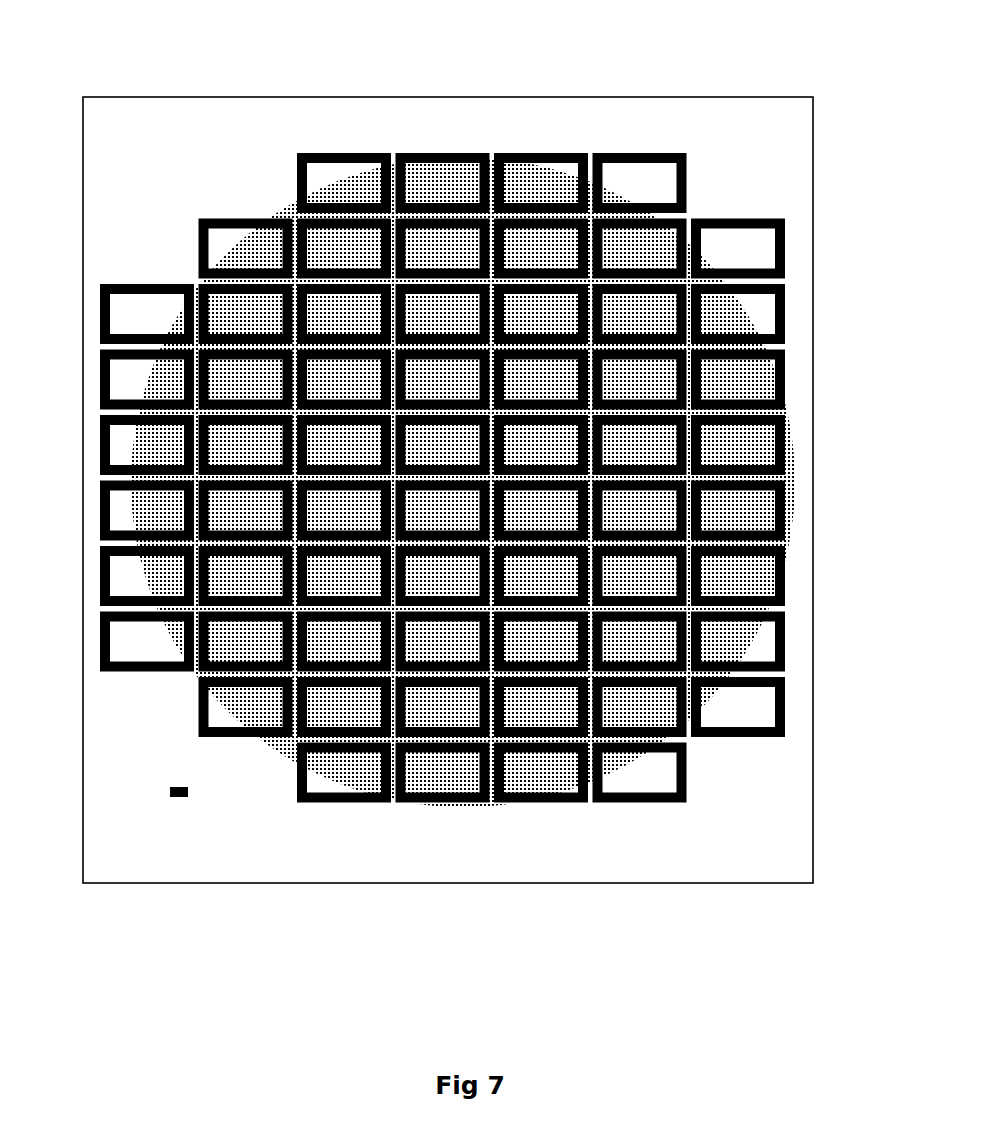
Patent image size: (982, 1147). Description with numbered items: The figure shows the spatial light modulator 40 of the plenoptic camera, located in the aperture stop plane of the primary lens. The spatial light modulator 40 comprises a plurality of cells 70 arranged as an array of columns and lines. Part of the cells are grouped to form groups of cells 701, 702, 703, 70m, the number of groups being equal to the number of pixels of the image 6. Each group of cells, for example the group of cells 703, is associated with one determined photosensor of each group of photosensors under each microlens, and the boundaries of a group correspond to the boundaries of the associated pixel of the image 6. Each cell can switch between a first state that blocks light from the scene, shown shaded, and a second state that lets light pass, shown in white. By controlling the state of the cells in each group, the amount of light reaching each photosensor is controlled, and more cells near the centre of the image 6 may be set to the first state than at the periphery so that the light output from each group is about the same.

The spatial light modulator 40 is at (640, 98).
The image 6 is at (273, 210).
The group of cells 701 is at (337, 155).
The group of cells 702 is at (452, 155).
The group of cells 703 is at (420, 459).
The group of cells 70m is at (648, 803).
The cell 70 is at (177, 797).